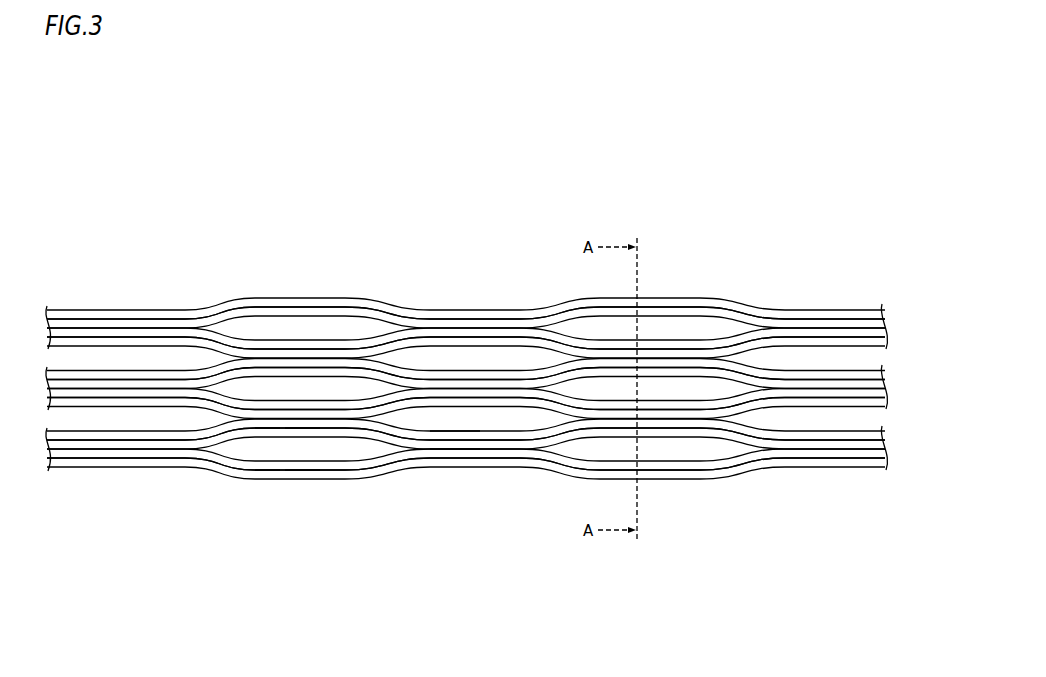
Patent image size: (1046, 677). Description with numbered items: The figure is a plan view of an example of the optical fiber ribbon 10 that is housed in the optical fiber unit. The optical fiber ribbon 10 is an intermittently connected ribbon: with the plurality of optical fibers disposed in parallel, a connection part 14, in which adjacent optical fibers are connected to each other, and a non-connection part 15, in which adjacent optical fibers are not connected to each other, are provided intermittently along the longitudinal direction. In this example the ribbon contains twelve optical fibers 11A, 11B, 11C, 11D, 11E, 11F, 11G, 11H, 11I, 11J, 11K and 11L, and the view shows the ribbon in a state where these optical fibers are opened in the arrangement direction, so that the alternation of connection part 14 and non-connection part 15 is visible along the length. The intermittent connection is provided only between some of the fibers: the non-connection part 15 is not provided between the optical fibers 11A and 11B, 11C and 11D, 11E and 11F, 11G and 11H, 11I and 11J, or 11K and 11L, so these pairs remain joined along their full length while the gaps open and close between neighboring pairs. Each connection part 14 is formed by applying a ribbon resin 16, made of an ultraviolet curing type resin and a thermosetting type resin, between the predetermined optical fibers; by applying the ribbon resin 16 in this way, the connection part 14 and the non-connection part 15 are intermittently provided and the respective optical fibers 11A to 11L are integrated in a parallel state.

The optical fiber ribbon 10 is at (516, 158).
The optical fiber 11A is at (870, 306).
The optical fiber 11B is at (887, 320).
The optical fiber 11C is at (889, 332).
The optical fiber 11D is at (889, 343).
The optical fiber 11E is at (887, 373).
The optical fiber 11F is at (889, 383).
The optical fiber 11G is at (889, 393).
The optical fiber 11H is at (889, 403).
The optical fiber 11I is at (887, 434).
The optical fiber 11J is at (889, 444).
The optical fiber 11K is at (889, 454).
The optical fiber 11L is at (885, 467).
The connection part 14 is at (285, 432).
The non-connection part 15 is at (427, 424).
The ribbon resin 16 is at (305, 432).